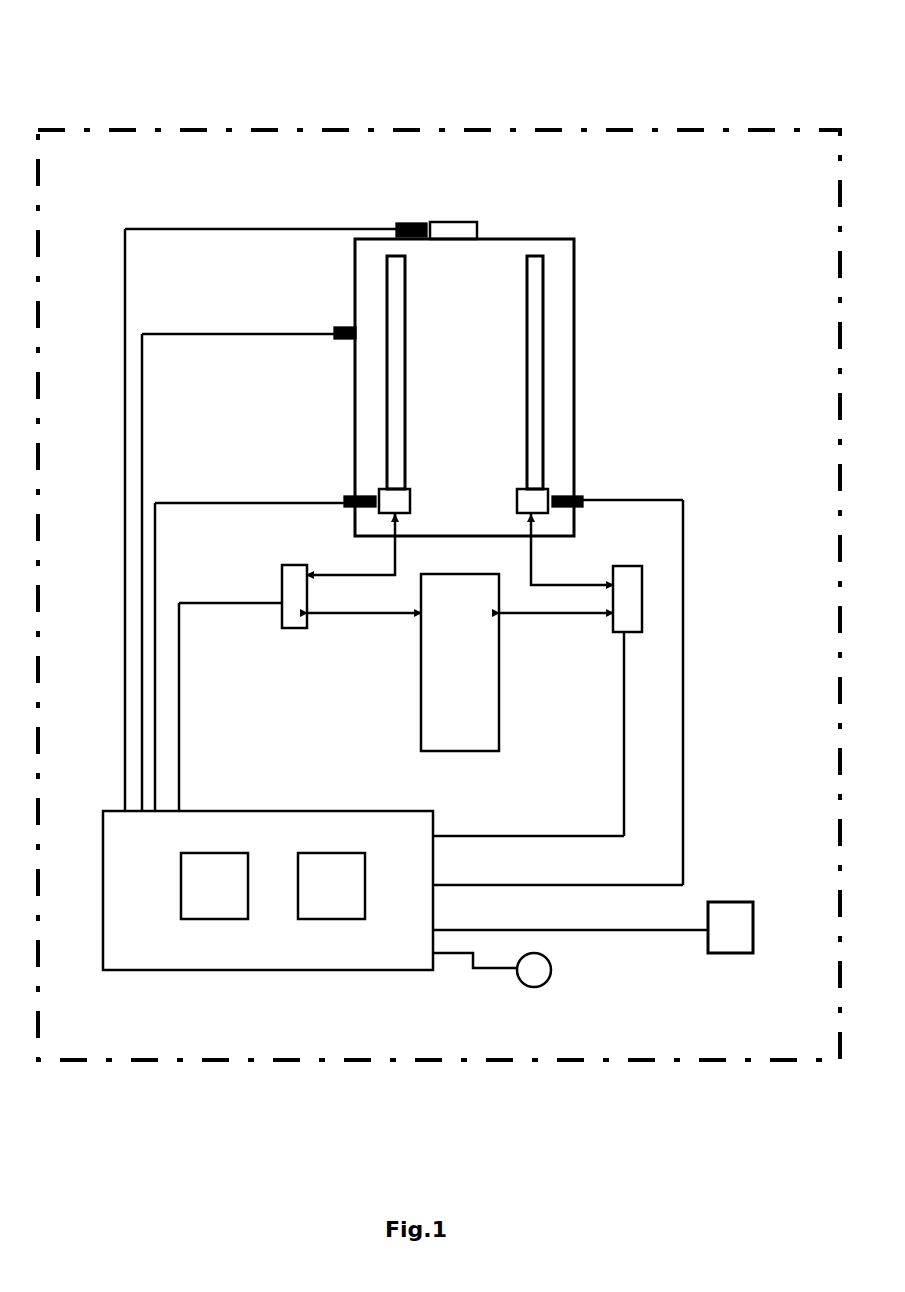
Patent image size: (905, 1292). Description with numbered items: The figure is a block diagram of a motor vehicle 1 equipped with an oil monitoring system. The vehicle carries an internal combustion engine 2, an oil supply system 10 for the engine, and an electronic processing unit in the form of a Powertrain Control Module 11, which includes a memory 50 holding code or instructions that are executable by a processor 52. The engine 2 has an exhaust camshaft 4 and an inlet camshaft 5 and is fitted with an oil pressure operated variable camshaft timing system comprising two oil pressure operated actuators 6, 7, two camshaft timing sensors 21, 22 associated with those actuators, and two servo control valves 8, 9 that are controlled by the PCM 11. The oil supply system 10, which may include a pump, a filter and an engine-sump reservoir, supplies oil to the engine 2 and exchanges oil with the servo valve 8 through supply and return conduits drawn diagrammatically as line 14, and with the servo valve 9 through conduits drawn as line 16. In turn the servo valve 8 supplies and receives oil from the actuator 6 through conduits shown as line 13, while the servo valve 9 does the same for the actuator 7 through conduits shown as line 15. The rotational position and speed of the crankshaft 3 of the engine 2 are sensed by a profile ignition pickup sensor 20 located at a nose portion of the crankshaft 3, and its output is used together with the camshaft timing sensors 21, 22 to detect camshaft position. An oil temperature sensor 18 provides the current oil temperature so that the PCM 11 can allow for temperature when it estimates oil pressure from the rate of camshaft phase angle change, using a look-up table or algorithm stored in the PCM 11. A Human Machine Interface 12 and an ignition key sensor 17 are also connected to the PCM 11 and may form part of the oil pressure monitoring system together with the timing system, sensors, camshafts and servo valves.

The motor vehicle 1 is at (84, 122).
The internal combustion engine 2 is at (505, 238).
The crankshaft 3 is at (450, 223).
The exhaust camshaft 4 is at (386, 325).
The inlet camshaft 5 is at (541, 327).
The oil pressure operated actuator 6 is at (376, 490).
The oil pressure operated actuator 7 is at (548, 490).
The servo control valve 8 is at (293, 628).
The servo control valve 9 is at (633, 632).
The oil supply system 10 is at (421, 720).
The Powertrain Control Module 11 is at (270, 811).
The Human Machine Interface 12 is at (718, 953).
The supply and return conduits 13 is at (340, 577).
The supply and return conduits 14 is at (368, 603).
The supply and return conduits 15 is at (548, 586).
The supply and return conduits 16 is at (574, 603).
The ignition key sensor 17 is at (551, 980).
The oil temperature sensor 18 is at (334, 330).
The profile ignition pickup sensor 20 is at (408, 223).
The camshaft timing sensor 21 is at (345, 497).
The camshaft timing sensor 22 is at (585, 493).
The memory 50 is at (214, 886).
The processor 52 is at (331, 886).